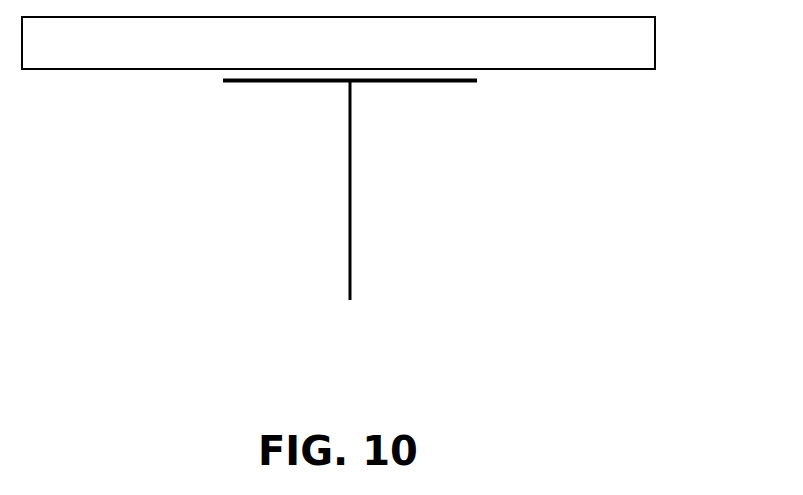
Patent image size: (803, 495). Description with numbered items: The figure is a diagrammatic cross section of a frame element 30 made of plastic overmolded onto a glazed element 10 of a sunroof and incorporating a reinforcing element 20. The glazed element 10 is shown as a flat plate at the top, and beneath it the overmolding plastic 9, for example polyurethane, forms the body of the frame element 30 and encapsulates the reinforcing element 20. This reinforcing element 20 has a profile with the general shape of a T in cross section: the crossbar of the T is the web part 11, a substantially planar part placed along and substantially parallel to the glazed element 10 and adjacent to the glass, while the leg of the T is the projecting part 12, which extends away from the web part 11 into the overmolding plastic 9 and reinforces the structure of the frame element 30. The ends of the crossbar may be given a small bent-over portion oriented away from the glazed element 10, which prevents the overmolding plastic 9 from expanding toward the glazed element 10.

The glazed element 10 is at (353, 55).
The overmolding plastic 9 is at (583, 196).
The web part 11 is at (420, 83).
The projecting part 12 is at (350, 174).
The reinforcing element 20 is at (356, 235).
The frame element 30 is at (686, 175).